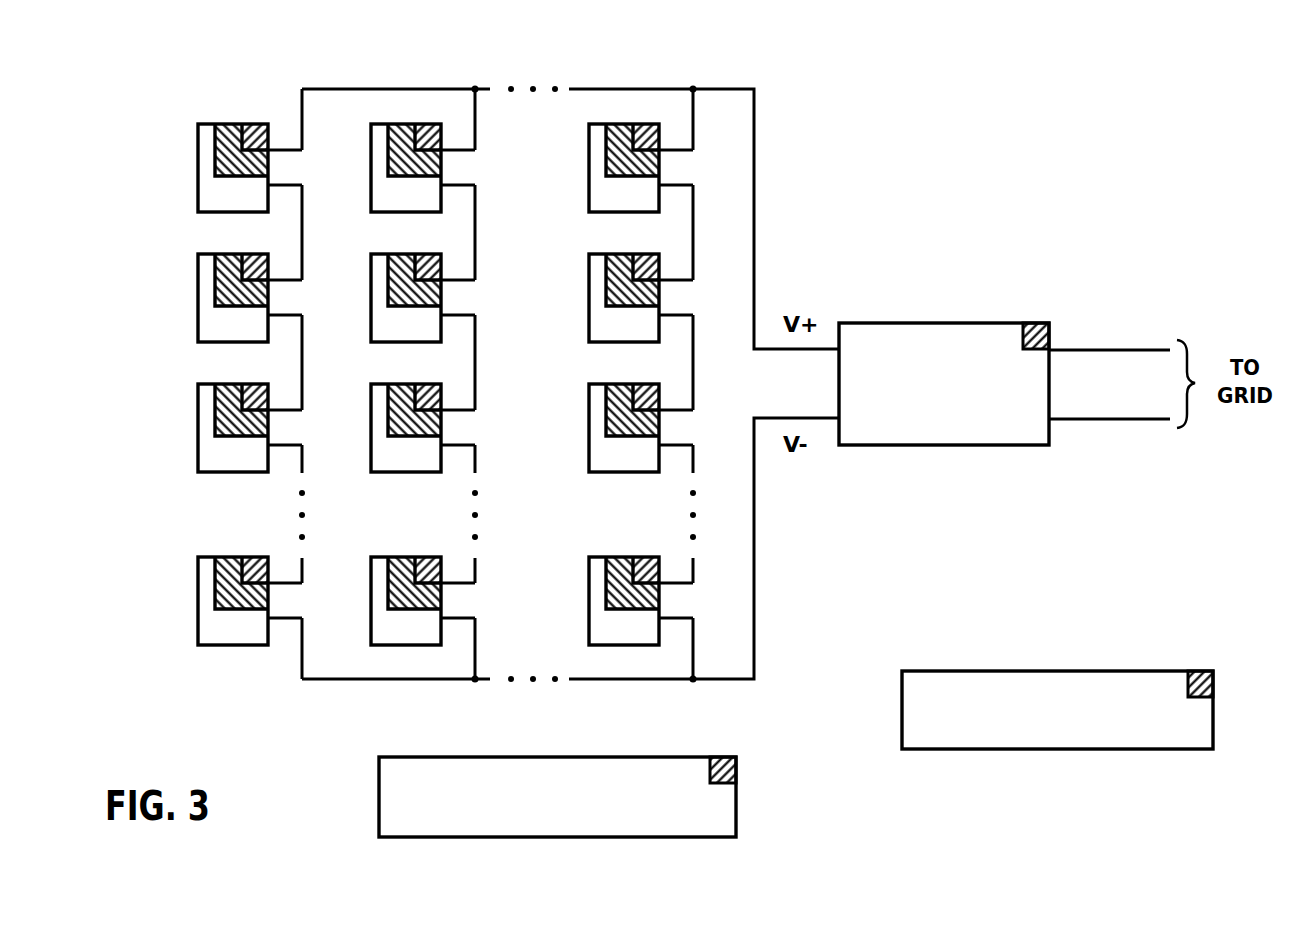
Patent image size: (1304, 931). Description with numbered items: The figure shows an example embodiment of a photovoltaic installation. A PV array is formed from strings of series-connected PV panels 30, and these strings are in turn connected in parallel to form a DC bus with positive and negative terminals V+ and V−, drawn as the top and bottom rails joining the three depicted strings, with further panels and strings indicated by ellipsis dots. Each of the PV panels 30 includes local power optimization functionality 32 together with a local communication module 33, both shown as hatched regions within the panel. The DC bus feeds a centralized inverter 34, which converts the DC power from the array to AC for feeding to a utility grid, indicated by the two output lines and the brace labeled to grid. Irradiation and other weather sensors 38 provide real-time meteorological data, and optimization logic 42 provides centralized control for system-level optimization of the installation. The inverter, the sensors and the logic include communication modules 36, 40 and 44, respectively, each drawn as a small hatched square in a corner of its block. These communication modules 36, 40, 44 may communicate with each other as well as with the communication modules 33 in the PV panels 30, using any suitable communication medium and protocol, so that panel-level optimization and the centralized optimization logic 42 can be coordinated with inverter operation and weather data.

The PV panel 30 is at (198, 166).
The local power optimization functionality 32 is at (225, 124).
The local communication module 33 is at (248, 123).
The centralized inverter 34 is at (937, 323).
The communication module 36 is at (1036, 323).
The irradiation and other weather sensors 38 is at (379, 800).
The communication module 40 is at (737, 762).
The optimization logic 42 is at (1053, 671).
The communication module 44 is at (1194, 671).